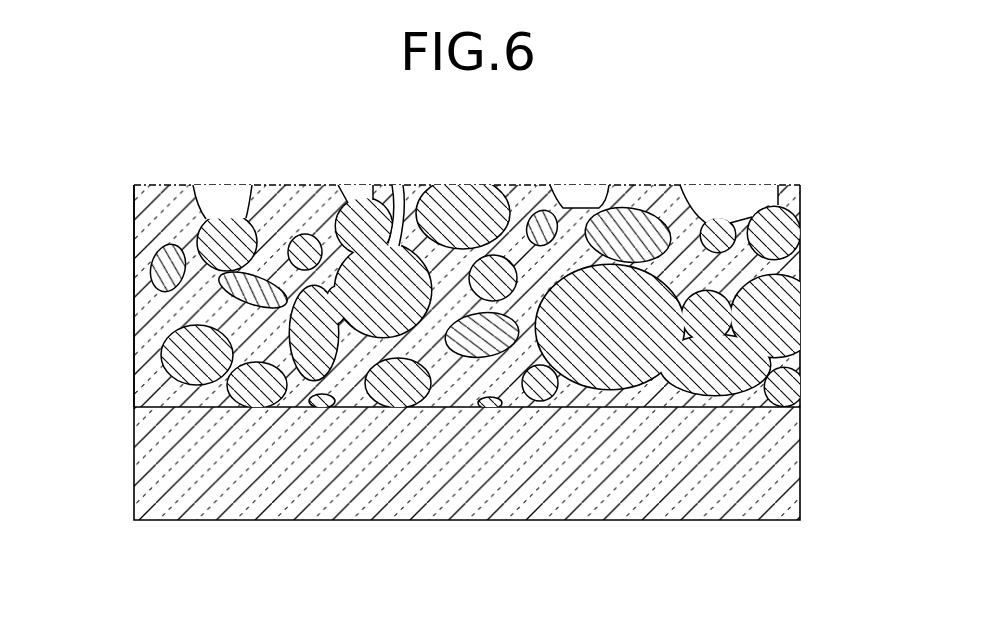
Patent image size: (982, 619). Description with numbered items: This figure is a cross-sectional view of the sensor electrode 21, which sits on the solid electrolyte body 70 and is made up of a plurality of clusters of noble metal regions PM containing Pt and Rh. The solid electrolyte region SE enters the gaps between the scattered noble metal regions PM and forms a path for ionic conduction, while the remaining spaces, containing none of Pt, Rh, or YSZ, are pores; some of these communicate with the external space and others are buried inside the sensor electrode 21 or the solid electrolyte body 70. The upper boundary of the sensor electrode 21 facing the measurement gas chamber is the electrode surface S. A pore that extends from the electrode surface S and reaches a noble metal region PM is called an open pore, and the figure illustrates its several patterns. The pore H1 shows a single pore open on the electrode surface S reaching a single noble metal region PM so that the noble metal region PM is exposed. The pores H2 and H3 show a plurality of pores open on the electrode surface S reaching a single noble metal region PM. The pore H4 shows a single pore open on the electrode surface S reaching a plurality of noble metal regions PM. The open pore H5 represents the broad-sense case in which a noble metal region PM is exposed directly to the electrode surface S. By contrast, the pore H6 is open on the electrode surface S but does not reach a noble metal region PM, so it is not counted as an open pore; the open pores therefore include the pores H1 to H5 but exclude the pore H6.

The sensor electrode 21 is at (808, 185).
The solid electrolyte body 70 is at (808, 407).
The electrode surface S is at (157, 184).
The solid electrolyte region SE is at (143, 216).
The noble metal region PM is at (165, 350).
The pore H1 is at (226, 192).
The pore H2 is at (331, 193).
The pore H3 is at (387, 195).
The pore H4 is at (716, 192).
The open pore H5 is at (460, 185).
The pore H6 is at (578, 192).